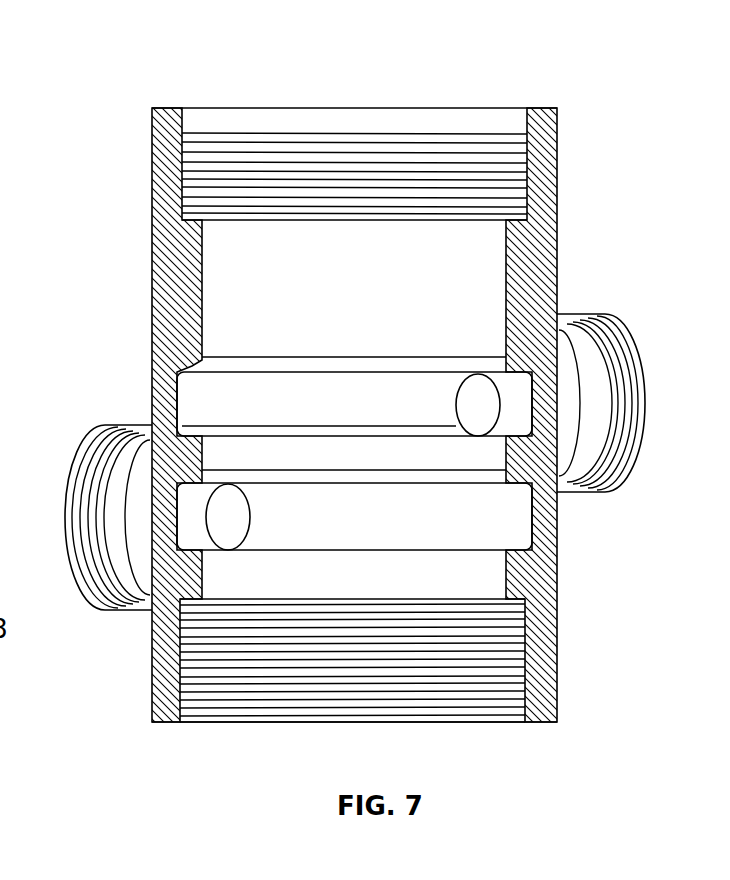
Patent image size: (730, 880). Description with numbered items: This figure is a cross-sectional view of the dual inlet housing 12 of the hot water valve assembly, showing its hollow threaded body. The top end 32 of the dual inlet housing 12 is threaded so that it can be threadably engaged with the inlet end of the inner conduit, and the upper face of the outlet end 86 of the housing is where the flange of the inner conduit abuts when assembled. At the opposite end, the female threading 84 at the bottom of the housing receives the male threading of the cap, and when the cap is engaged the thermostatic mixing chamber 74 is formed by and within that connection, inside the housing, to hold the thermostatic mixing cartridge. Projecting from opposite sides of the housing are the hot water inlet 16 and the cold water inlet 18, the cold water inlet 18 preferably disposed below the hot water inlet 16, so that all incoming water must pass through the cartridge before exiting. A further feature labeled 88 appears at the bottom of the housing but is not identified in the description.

The dual inlet housing 12 is at (634, 86).
The hot water inlet 16 is at (645, 378).
The cold water inlet 18 is at (65, 518).
The top end 32 is at (497, 108).
The thermostatic mixing chamber 74 is at (347, 289).
The female threading 84 is at (483, 723).
The outlet end 86 is at (256, 110).
The bottom end face 88 is at (303, 723).